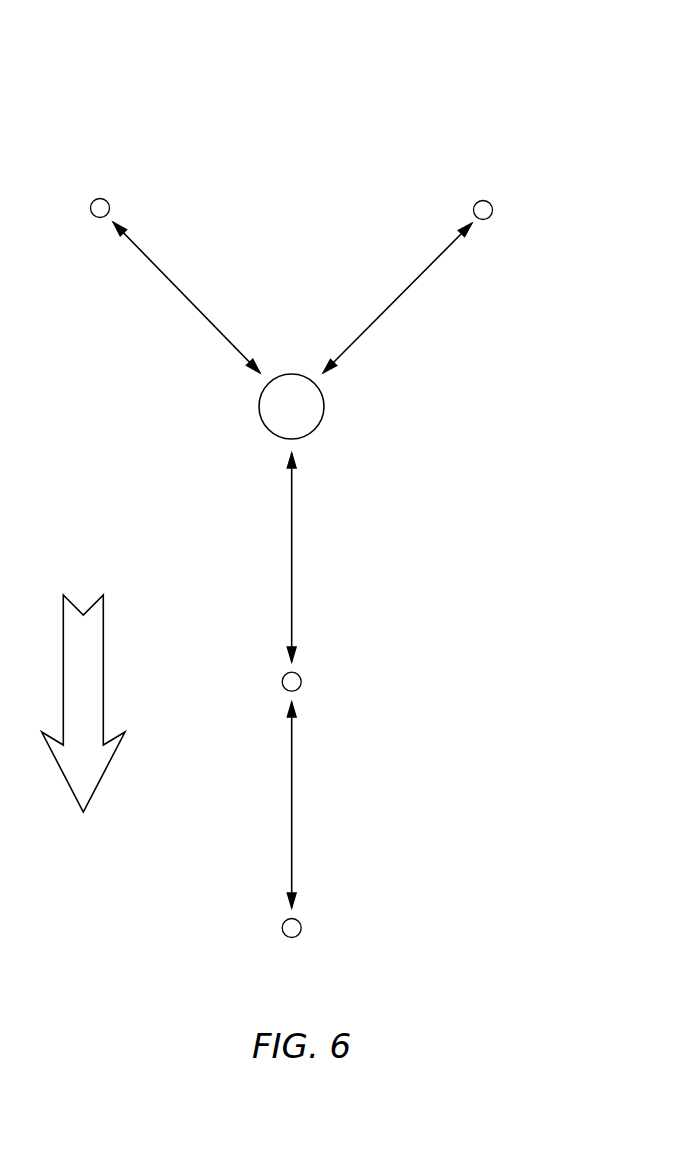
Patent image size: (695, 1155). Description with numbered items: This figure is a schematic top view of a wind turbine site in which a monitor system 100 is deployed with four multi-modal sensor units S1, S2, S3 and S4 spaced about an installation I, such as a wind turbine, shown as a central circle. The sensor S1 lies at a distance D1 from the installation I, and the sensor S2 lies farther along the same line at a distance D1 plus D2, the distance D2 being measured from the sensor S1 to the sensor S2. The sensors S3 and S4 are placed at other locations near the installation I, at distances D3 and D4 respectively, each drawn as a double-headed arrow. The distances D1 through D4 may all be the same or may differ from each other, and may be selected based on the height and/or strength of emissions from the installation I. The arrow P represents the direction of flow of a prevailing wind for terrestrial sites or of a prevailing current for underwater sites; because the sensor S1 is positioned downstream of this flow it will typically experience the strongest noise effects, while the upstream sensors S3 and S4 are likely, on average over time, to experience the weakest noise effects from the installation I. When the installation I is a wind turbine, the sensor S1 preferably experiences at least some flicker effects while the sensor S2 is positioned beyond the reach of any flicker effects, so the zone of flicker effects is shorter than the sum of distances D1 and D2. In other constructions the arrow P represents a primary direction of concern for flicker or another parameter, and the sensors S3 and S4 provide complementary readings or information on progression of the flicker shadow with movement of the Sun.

The monitor system 100 is at (414, 77).
The installation I is at (291, 406).
The sensor unit S1 is at (302, 677).
The sensor unit S2 is at (302, 926).
The sensor unit S3 is at (102, 198).
The sensor unit S4 is at (493, 206).
The distance D1 is at (292, 548).
The distance D2 is at (292, 805).
The distance D3 is at (175, 281).
The distance D4 is at (408, 286).
The arrow P is at (104, 665).